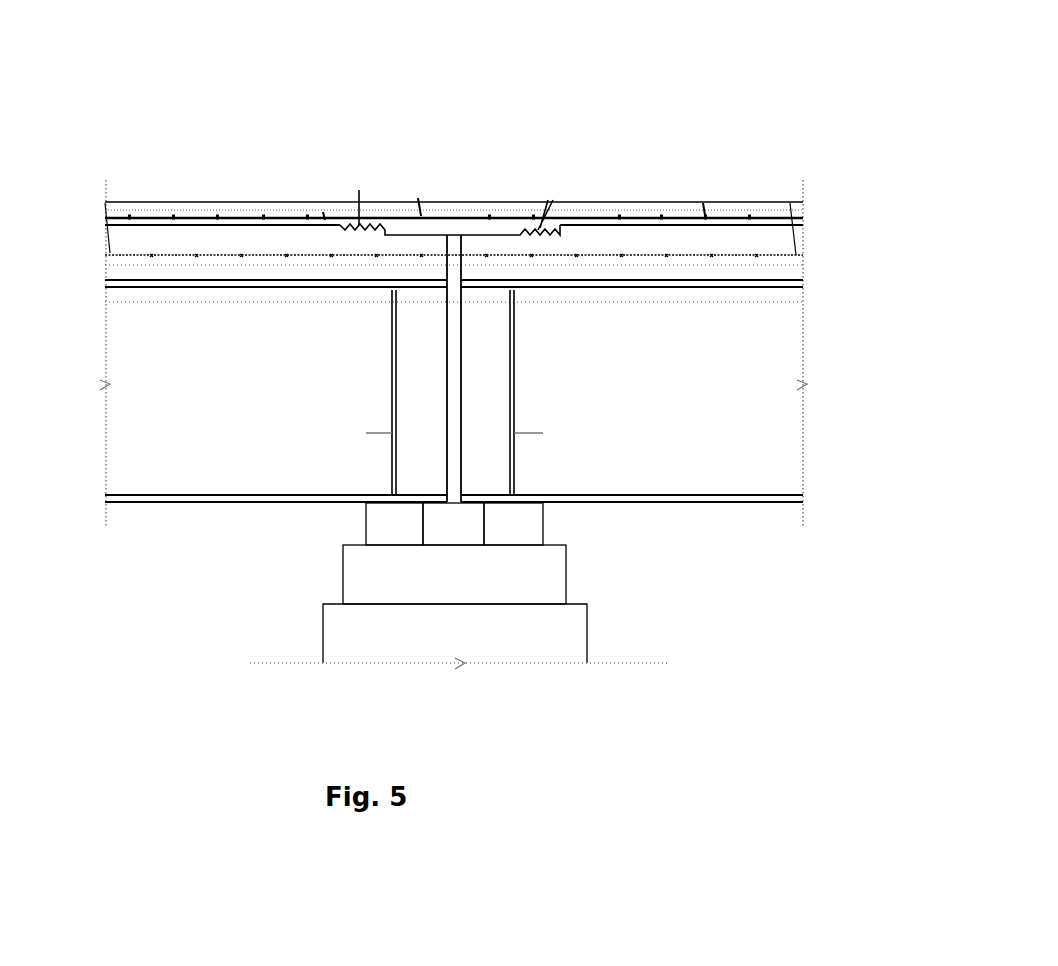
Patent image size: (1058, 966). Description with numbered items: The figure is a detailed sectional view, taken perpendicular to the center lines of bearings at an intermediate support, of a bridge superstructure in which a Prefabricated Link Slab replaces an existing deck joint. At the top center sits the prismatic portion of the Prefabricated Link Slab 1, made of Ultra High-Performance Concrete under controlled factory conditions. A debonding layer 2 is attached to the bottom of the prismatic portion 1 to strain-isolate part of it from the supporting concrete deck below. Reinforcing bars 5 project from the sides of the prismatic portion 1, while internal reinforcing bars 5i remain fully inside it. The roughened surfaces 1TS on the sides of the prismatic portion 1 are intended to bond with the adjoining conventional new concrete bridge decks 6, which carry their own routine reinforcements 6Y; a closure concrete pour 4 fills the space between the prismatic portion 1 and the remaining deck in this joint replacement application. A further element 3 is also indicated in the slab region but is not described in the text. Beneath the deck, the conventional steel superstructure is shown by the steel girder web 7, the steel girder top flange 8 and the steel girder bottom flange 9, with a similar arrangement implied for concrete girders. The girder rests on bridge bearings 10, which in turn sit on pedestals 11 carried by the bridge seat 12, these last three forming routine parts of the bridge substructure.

The prismatic portion of the Prefabricated Link Slab 1 is at (457, 200).
The debonding layer 2 is at (436, 216).
The deck top reinforcement layer 3 is at (495, 196).
The closure concrete pour 4 is at (667, 202).
The reinforcing bars 5 is at (325, 212).
The internal reinforcing bars 5i is at (418, 198).
The roughened surfaces 1TS is at (359, 225).
The reinforcements 6Y is at (133, 247).
The new concrete bridge decks 6 is at (535, 270).
The steel girder web 7 is at (190, 404).
The steel girder top flange 8 is at (106, 281).
The steel girder bottom flange 9 is at (106, 497).
The bridge bearings 10 is at (543, 525).
The pedestals 11 is at (566, 578).
The bridge seat 12 is at (587, 635).